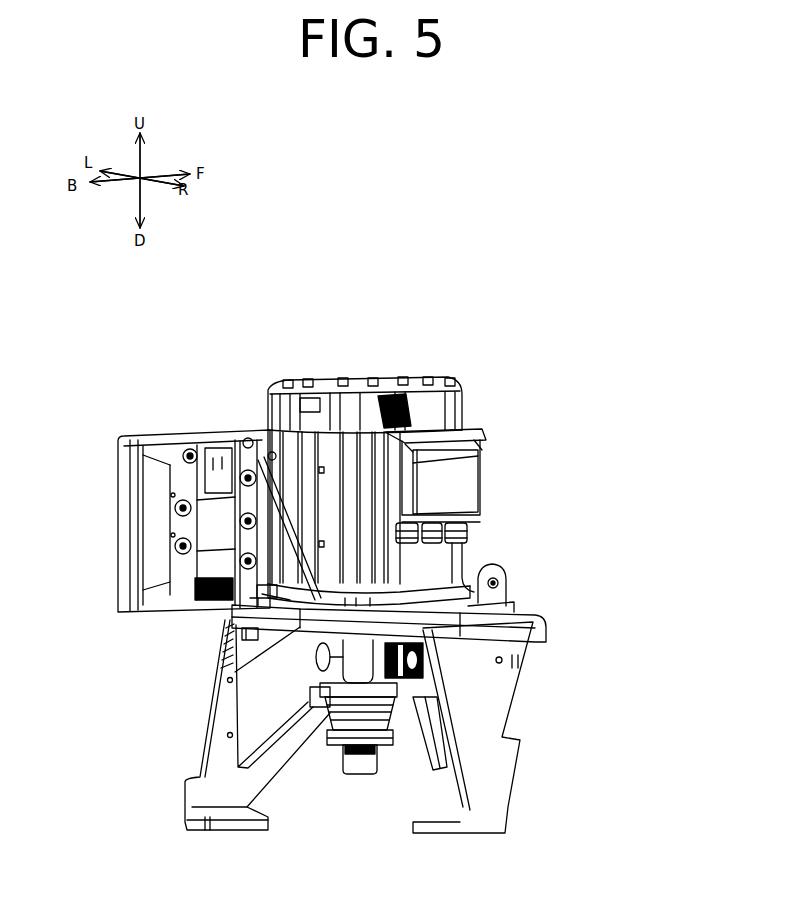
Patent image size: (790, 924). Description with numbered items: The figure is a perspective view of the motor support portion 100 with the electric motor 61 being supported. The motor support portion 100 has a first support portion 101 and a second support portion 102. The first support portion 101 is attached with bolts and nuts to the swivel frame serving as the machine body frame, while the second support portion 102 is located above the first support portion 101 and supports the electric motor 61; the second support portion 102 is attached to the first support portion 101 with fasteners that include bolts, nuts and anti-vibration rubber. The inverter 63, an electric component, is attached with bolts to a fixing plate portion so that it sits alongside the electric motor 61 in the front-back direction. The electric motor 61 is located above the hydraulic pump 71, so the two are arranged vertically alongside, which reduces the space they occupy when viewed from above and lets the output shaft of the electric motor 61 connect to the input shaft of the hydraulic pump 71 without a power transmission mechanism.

The electric motor 61 is at (378, 378).
The inverter 63 is at (158, 608).
The hydraulic pump 71 is at (363, 784).
The motor support portion 100 is at (608, 508).
The first support portion 101 is at (526, 686).
The second support portion 102 is at (500, 562).